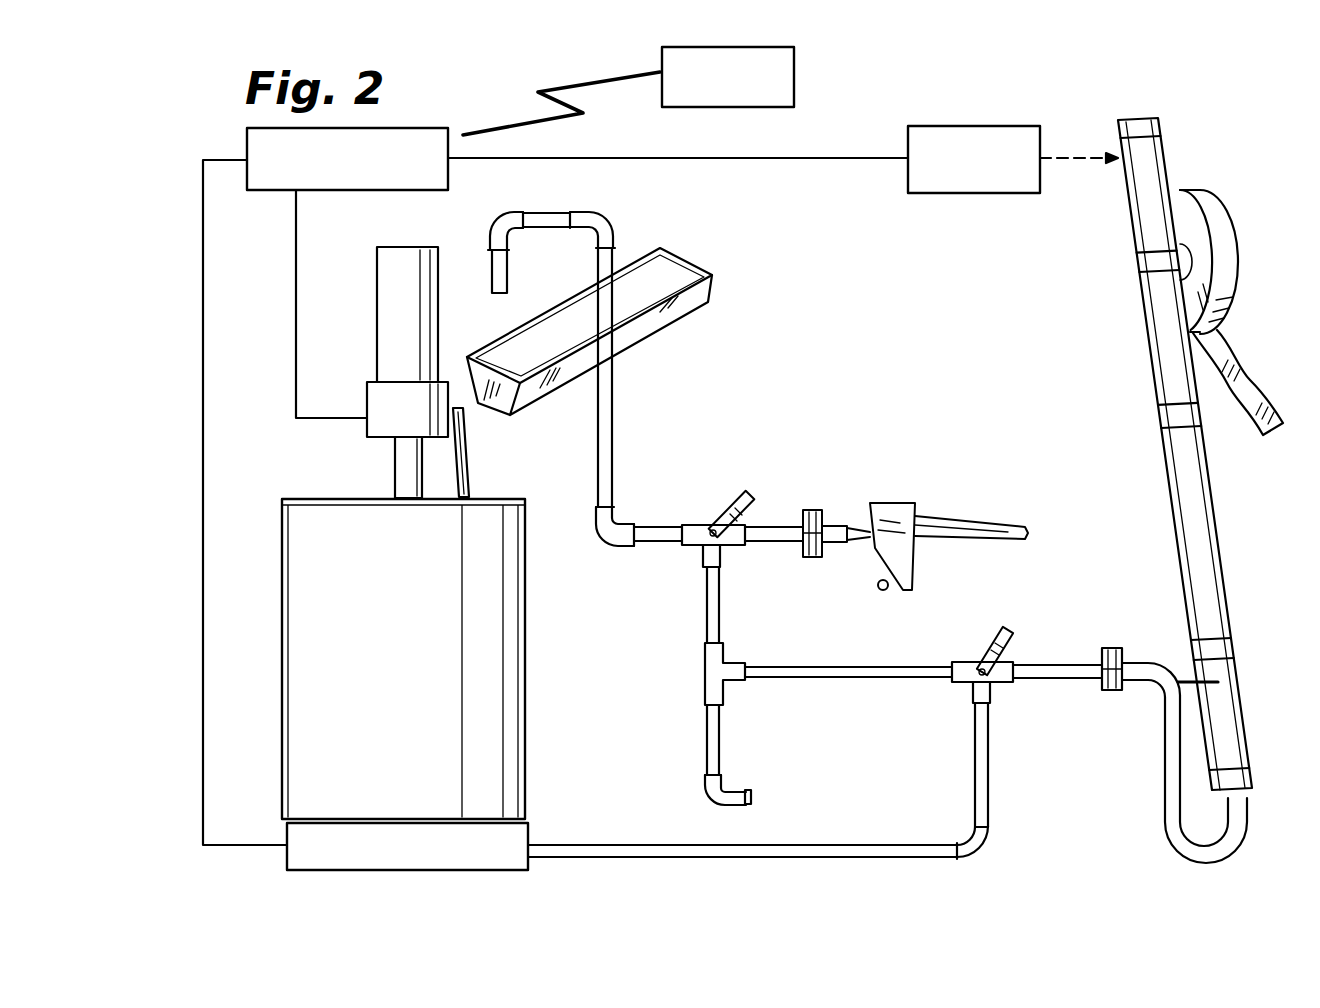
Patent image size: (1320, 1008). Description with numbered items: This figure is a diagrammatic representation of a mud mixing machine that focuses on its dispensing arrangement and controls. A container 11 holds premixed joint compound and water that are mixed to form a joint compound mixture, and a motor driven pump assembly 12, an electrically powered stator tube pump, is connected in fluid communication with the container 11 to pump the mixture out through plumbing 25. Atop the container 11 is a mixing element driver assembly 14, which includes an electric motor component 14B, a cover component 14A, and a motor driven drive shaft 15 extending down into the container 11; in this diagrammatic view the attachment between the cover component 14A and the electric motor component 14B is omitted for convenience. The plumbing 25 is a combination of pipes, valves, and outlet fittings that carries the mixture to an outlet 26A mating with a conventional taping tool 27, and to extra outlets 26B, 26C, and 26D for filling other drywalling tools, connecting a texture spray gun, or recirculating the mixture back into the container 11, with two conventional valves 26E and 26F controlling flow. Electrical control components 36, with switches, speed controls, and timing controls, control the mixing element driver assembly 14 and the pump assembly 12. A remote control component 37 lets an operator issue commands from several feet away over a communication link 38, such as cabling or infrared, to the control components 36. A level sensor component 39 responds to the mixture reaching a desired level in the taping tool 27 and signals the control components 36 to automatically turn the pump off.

The container 11 is at (527, 683).
The motor driven pump assembly 12 is at (530, 826).
The mixing element driver assembly 14 is at (392, 354).
The cover component 14A is at (293, 497).
The electric motor component 14B is at (383, 338).
The motor driven drive shaft 15 is at (395, 461).
The plumbing 25 is at (824, 845).
The outlet 26A is at (1192, 814).
The outlet 26B is at (858, 525).
The outlet 26C is at (508, 272).
The outlet 26D is at (752, 795).
The valve 26E is at (742, 492).
The valve 26F is at (1012, 640).
The taping tool 27 is at (1218, 524).
The electrical control components 36 is at (448, 127).
The remote control component 37 is at (794, 78).
The communication link 38 is at (611, 83).
The level sensor component 39 is at (948, 126).